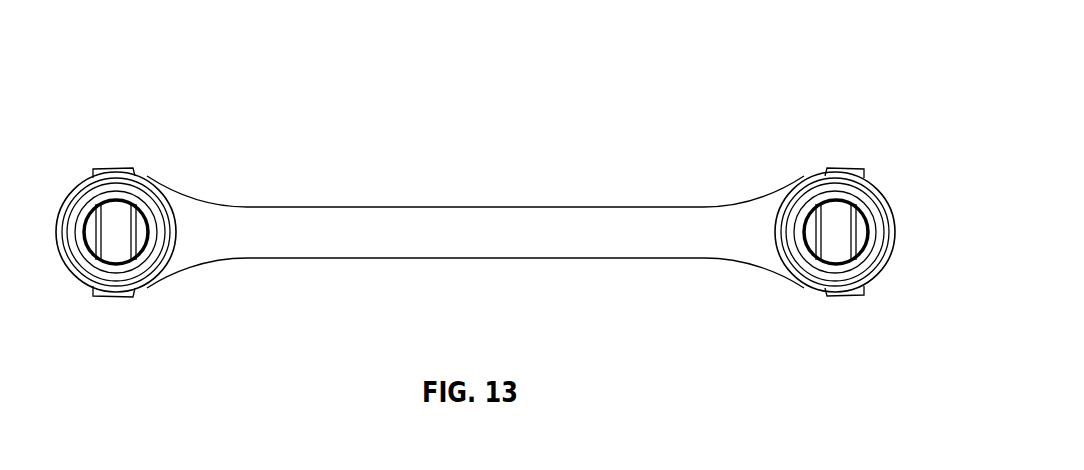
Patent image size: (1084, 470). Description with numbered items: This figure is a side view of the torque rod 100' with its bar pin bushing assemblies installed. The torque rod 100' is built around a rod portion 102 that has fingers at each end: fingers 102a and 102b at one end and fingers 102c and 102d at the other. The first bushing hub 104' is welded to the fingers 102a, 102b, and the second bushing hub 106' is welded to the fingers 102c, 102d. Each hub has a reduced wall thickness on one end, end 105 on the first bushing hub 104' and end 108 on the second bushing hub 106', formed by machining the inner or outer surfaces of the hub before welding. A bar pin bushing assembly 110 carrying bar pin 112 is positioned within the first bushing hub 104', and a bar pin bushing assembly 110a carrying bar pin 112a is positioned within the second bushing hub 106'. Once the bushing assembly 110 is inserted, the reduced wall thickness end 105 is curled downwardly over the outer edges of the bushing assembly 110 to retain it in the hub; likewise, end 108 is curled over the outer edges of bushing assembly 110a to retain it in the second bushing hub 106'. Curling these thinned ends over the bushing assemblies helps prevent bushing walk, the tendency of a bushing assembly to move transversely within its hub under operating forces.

The torque rod 100' is at (502, 188).
The rod portion 102 is at (427, 242).
The finger 102a is at (830, 165).
The finger 102b is at (822, 293).
The finger 102c is at (125, 172).
The finger 102d is at (133, 293).
The first bushing hub 104' is at (849, 186).
The end 105 is at (883, 252).
The second bushing hub 106' is at (142, 211).
The end 108 is at (78, 272).
The bar pin bushing assembly 110 is at (801, 158).
The bar pin bushing assembly 110a is at (95, 116).
The bar pin 112 is at (845, 232).
The bar pin 112a is at (115, 215).